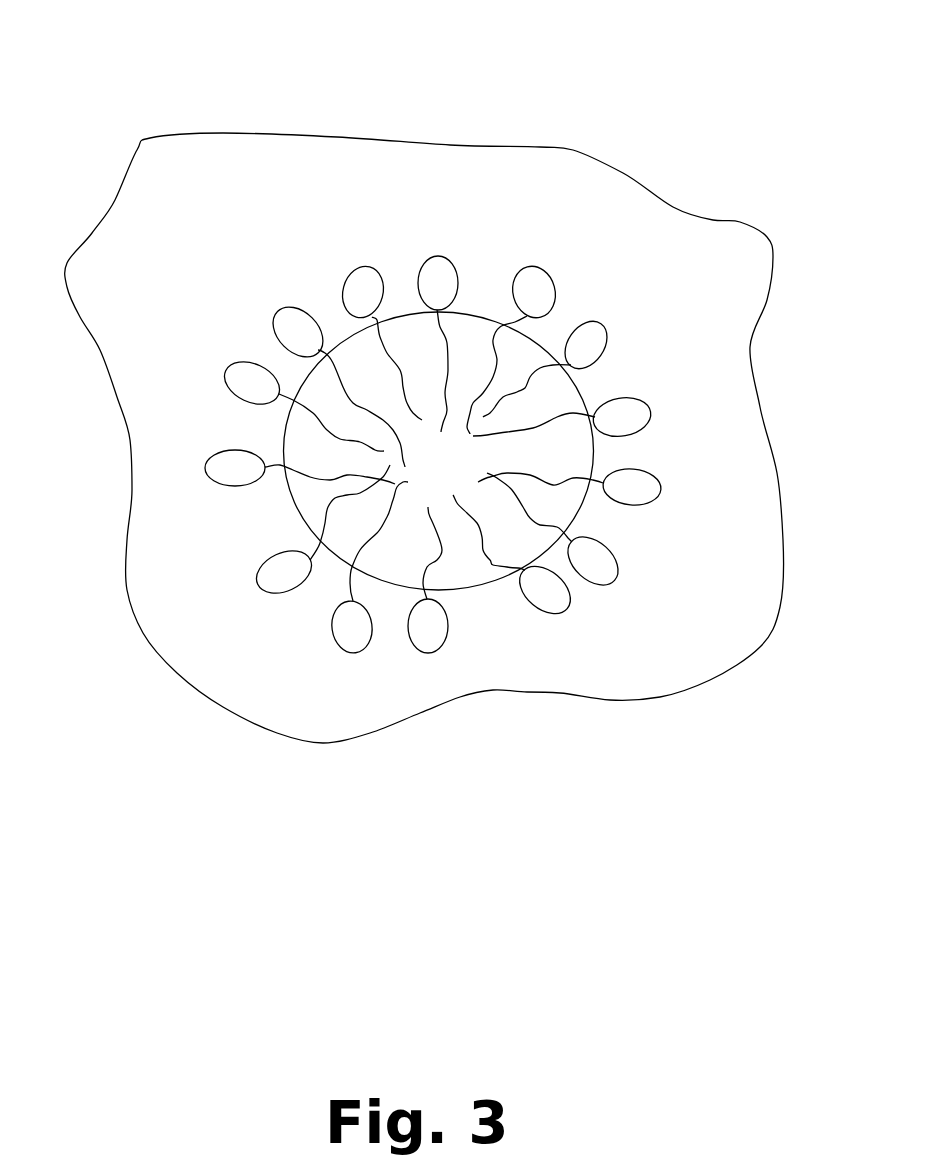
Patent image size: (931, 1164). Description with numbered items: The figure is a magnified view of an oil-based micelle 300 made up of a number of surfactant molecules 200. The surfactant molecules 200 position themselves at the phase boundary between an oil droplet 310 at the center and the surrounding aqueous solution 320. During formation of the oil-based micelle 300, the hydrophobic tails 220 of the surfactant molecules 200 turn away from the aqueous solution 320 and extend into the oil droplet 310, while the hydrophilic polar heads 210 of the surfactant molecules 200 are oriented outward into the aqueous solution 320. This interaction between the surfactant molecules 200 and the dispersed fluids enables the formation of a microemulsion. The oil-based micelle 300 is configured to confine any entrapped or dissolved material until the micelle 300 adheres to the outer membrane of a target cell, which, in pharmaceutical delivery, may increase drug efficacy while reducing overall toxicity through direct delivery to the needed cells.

The oil-based micelle 300 is at (660, 130).
The aqueous solution 320 is at (128, 257).
The surfactant molecules 200 is at (323, 283).
The hydrophilic polar heads 210 is at (363, 292).
The hydrophobic tails 220 is at (493, 566).
The oil droplet 310 is at (438, 450).